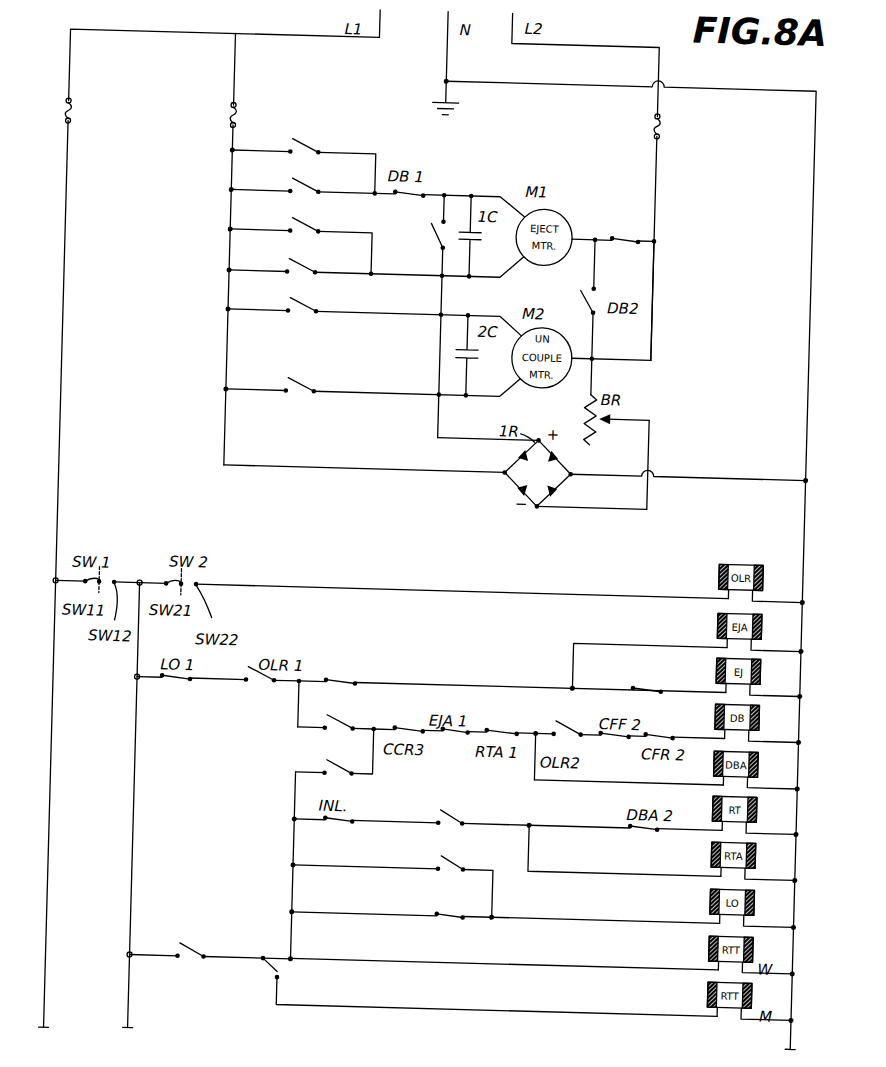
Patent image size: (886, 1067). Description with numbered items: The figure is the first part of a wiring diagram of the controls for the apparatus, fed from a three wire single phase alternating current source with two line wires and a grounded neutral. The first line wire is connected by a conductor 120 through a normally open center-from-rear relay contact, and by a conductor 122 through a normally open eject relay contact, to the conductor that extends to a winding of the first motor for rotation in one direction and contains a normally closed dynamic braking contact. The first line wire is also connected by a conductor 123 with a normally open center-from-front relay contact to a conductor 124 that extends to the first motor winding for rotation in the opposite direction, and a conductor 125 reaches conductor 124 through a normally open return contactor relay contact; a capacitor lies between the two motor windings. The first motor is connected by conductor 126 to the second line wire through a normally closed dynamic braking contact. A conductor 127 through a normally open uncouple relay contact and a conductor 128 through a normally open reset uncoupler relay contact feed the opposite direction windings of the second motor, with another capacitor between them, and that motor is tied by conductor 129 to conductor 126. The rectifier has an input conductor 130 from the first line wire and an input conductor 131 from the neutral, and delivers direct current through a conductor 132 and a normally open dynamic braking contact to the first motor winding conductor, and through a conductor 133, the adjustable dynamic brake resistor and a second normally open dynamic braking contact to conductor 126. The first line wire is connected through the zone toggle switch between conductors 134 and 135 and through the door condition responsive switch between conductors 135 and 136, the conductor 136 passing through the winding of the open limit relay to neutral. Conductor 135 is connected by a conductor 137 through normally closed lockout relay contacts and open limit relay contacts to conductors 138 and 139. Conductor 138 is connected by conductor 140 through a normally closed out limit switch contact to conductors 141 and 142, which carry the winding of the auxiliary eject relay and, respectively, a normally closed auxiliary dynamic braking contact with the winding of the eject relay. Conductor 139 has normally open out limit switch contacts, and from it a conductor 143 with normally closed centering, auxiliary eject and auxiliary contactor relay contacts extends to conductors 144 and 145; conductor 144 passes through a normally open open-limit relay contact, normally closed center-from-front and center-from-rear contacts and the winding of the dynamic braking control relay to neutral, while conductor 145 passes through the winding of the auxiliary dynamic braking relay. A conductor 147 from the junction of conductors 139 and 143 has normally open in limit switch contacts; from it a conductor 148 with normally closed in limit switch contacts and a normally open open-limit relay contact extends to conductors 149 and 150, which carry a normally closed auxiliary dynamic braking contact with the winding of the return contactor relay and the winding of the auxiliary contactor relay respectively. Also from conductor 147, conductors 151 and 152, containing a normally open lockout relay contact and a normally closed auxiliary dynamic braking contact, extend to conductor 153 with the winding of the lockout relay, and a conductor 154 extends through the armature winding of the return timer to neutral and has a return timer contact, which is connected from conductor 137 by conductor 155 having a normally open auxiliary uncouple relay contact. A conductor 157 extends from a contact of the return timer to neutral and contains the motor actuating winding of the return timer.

The conductor 120 is at (251, 149).
The conductor 122 is at (258, 168).
The conductor 123 is at (255, 231).
The conductor 124 is at (412, 273).
The conductor 125 is at (256, 269).
The conductor 126 is at (580, 220).
The conductor 127 is at (259, 293).
The conductor 128 is at (262, 371).
The conductor 129 is at (645, 290).
The input conductor 130 is at (234, 465).
The input conductor 131 is at (707, 449).
The conductor 132 is at (426, 420).
The conductor 133 is at (575, 500).
The conductor 134 is at (55, 589).
The conductor 135 is at (138, 587).
The conductor 136 is at (380, 583).
The conductor 137 is at (137, 649).
The conductor 138 is at (315, 679).
The conductor 139 is at (298, 710).
The conductor 140 is at (443, 683).
The conductor 141 is at (619, 636).
The conductor 142 is at (595, 682).
The conductor 143 is at (528, 727).
The conductor 144 is at (593, 727).
The conductor 145 is at (556, 775).
The conductor 147 is at (298, 792).
The conductor 148 is at (543, 794).
The conductor 149 is at (559, 826).
The conductor 150 is at (610, 865).
The conductor 151 is at (332, 849).
The conductor 152 is at (328, 912).
The conductor 153 is at (593, 912).
The conductor 154 is at (335, 942).
The conductor 155 is at (246, 962).
The conductor 157 is at (452, 1004).